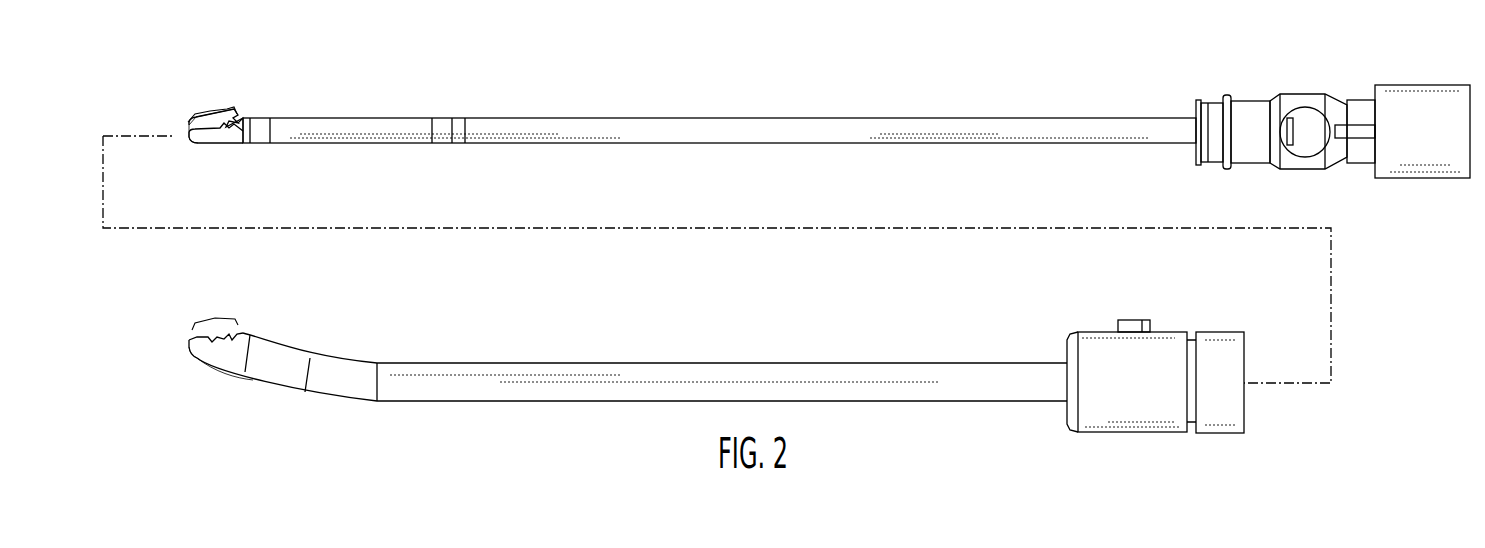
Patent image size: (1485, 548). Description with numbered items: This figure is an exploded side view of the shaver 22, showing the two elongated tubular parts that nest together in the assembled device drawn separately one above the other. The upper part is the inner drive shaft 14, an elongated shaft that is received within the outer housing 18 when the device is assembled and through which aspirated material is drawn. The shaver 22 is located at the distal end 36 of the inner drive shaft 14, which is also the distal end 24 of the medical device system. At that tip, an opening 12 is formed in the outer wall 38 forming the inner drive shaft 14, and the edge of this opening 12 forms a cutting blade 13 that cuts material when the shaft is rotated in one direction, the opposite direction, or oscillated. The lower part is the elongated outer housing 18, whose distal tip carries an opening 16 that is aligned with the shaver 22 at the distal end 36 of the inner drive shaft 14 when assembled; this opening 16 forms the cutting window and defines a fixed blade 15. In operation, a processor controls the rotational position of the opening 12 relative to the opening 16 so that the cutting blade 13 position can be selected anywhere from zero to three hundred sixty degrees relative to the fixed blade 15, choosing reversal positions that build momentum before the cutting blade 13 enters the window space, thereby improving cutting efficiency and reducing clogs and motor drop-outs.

The opening 12 is at (215, 102).
The cutting blade 13 is at (221, 132).
The inner drive shaft 14 is at (812, 118).
The fixed blade 15 is at (230, 347).
The opening 16 is at (216, 320).
The outer housing 18 is at (542, 362).
The shaver 22 is at (172, 89).
The distal end 24 is at (183, 151).
The distal end 36 is at (159, 108).
The outer wall 38 is at (245, 118).